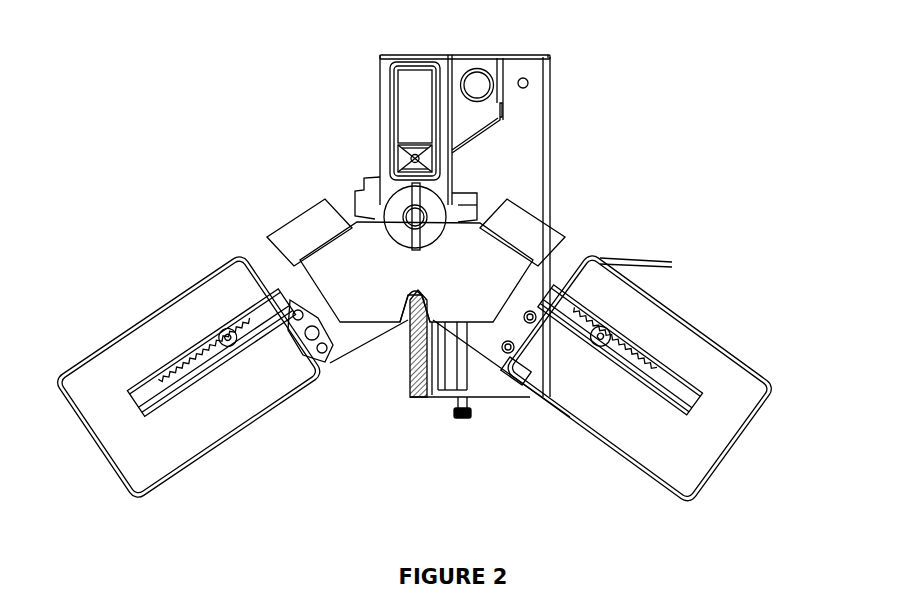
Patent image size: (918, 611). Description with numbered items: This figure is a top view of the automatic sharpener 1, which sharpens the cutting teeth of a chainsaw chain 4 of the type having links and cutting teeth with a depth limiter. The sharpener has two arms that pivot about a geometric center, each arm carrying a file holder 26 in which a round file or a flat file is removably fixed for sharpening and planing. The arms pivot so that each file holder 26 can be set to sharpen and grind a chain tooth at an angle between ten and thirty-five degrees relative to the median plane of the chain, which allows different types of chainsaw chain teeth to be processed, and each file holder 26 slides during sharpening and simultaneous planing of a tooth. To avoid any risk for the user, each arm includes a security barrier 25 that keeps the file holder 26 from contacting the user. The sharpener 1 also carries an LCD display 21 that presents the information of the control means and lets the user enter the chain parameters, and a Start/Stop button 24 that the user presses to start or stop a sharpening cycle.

The automatic sharpener 1 is at (268, 104).
The chainsaw chain 4 is at (412, 393).
The LCD display 21 is at (418, 80).
The Start/Stop button 24 is at (477, 88).
The security barrier 25 is at (77, 364).
The file holder 26 is at (145, 394).